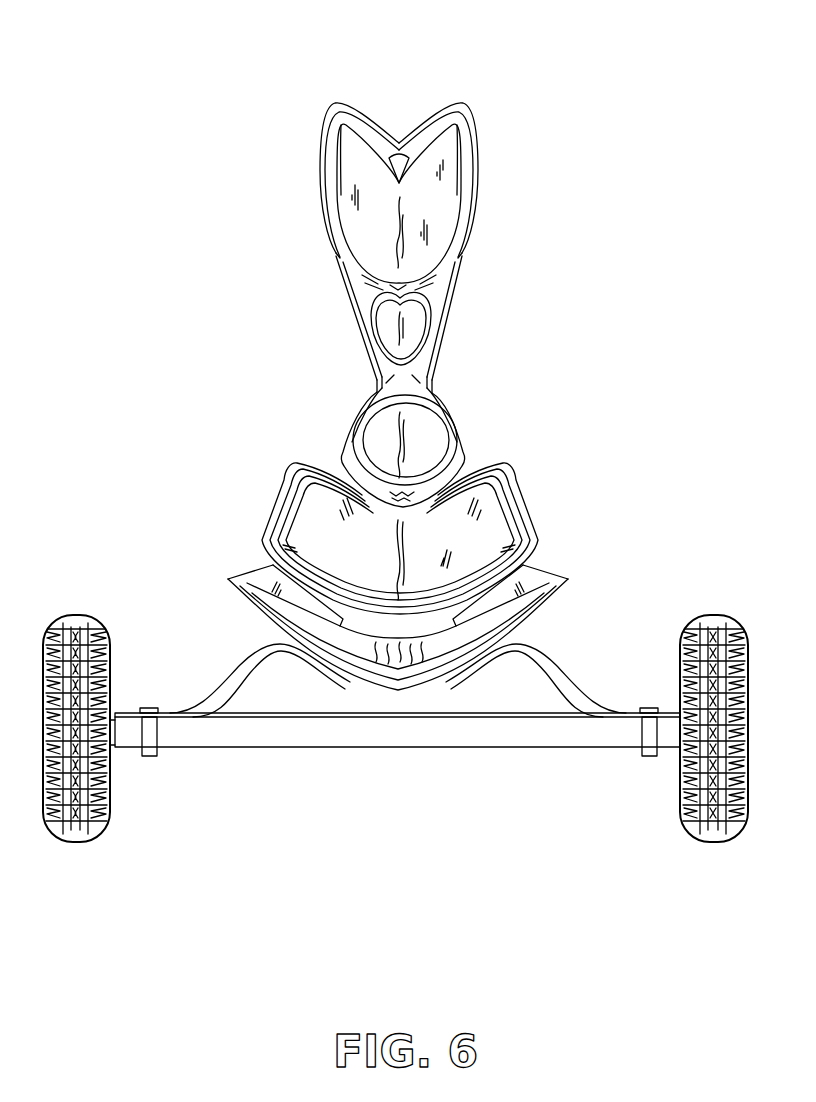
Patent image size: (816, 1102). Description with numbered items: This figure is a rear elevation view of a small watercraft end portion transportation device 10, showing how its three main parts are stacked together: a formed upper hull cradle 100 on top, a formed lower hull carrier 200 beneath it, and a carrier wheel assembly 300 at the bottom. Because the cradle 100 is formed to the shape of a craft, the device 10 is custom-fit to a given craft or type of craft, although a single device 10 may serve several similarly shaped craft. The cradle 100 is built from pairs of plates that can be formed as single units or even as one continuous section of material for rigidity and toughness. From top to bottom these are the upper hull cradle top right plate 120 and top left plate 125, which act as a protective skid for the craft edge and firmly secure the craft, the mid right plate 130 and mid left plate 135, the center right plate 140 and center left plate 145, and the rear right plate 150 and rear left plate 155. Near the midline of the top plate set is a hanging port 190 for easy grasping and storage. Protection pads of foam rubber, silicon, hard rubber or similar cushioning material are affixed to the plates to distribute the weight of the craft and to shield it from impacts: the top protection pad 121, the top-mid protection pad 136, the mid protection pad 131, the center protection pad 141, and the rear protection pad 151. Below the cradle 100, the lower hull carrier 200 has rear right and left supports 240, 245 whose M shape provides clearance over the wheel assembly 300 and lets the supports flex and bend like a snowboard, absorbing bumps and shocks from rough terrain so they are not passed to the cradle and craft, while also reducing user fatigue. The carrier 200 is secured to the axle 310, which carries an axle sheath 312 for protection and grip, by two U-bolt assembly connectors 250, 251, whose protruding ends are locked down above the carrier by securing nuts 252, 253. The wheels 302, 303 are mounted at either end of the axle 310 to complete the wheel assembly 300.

The small watercraft end portion transportation device 10 is at (117, 88).
The upper hull cradle 100 is at (510, 353).
The upper hull cradle top right plate 120 is at (465, 243).
The upper hull cradle top protection pad 121 is at (358, 133).
The upper hull cradle top left plate 125 is at (337, 255).
The hanging port 190 is at (398, 157).
The upper hull cradle mid right plate 130 is at (467, 453).
The upper hull cradle mid protection pad 131 is at (368, 408).
The upper hull cradle mid left plate 135 is at (340, 432).
The upper hull cradle top-mid protection pad 136 is at (387, 327).
The upper hull cradle center right plate 140 is at (527, 507).
The upper hull cradle center protection pad 141 is at (317, 528).
The upper hull cradle center left plate 145 is at (268, 538).
The upper hull cradle rear right plate 150 is at (550, 567).
The upper hull cradle rear protection pad 151 is at (283, 613).
The upper hull cradle rear left plate 155 is at (247, 607).
The lower hull carrier 200 is at (628, 562).
The lower hull carrier rear right support 240 is at (550, 665).
The lower hull carrier rear left support 245 is at (245, 672).
The assembly connector 250 is at (650, 756).
The assembly connector 251 is at (150, 756).
The securing nut 252 is at (655, 708).
The securing nut 253 is at (127, 708).
The carrier wheel assembly 300 is at (434, 836).
The wheel 302 is at (695, 878).
The wheel 303 is at (72, 866).
The axle 310 is at (117, 752).
The axle sheath 312 is at (280, 748).